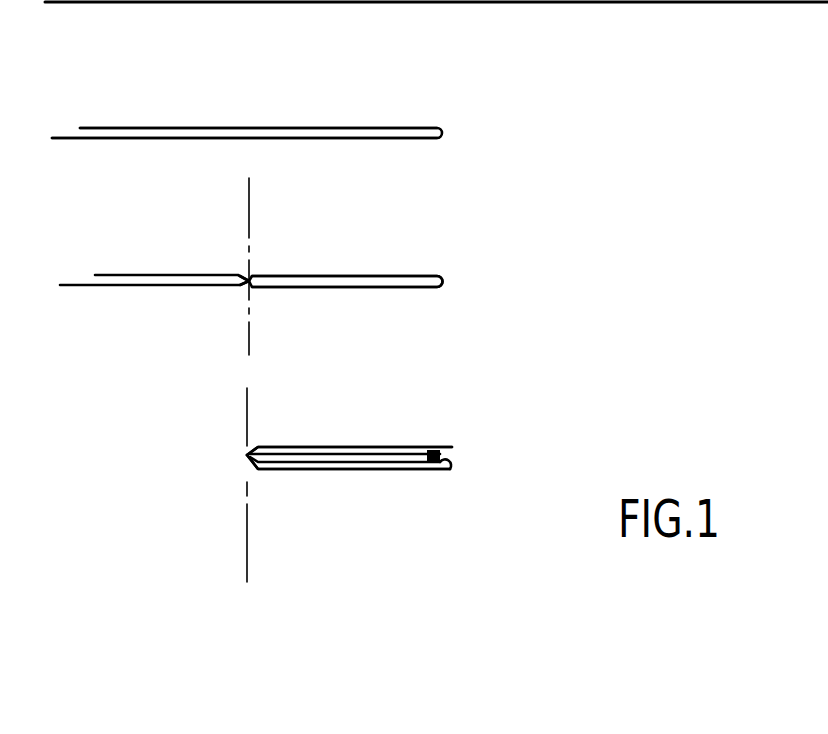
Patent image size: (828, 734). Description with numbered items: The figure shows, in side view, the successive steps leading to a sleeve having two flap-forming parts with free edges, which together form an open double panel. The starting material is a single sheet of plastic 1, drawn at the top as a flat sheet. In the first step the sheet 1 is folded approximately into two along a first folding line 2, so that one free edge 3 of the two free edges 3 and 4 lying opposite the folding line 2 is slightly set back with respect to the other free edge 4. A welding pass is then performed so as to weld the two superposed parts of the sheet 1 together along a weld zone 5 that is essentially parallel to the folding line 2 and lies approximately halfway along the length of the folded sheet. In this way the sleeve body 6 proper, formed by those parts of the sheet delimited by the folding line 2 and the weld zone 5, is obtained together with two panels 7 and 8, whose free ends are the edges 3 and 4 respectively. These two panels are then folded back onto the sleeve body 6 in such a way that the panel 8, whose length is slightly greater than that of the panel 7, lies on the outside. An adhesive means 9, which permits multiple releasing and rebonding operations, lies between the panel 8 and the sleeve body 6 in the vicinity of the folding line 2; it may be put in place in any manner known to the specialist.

The sheet of plastic 1 is at (464, 2).
The first folding line 2 is at (442, 134).
The free edge 3 is at (82, 128).
The free edge 4 is at (62, 140).
The weld zone 5 is at (252, 268).
The sleeve body 6 is at (348, 288).
The panel 7 is at (156, 273).
The panel 8 is at (97, 288).
The adhesive means 9 is at (452, 453).